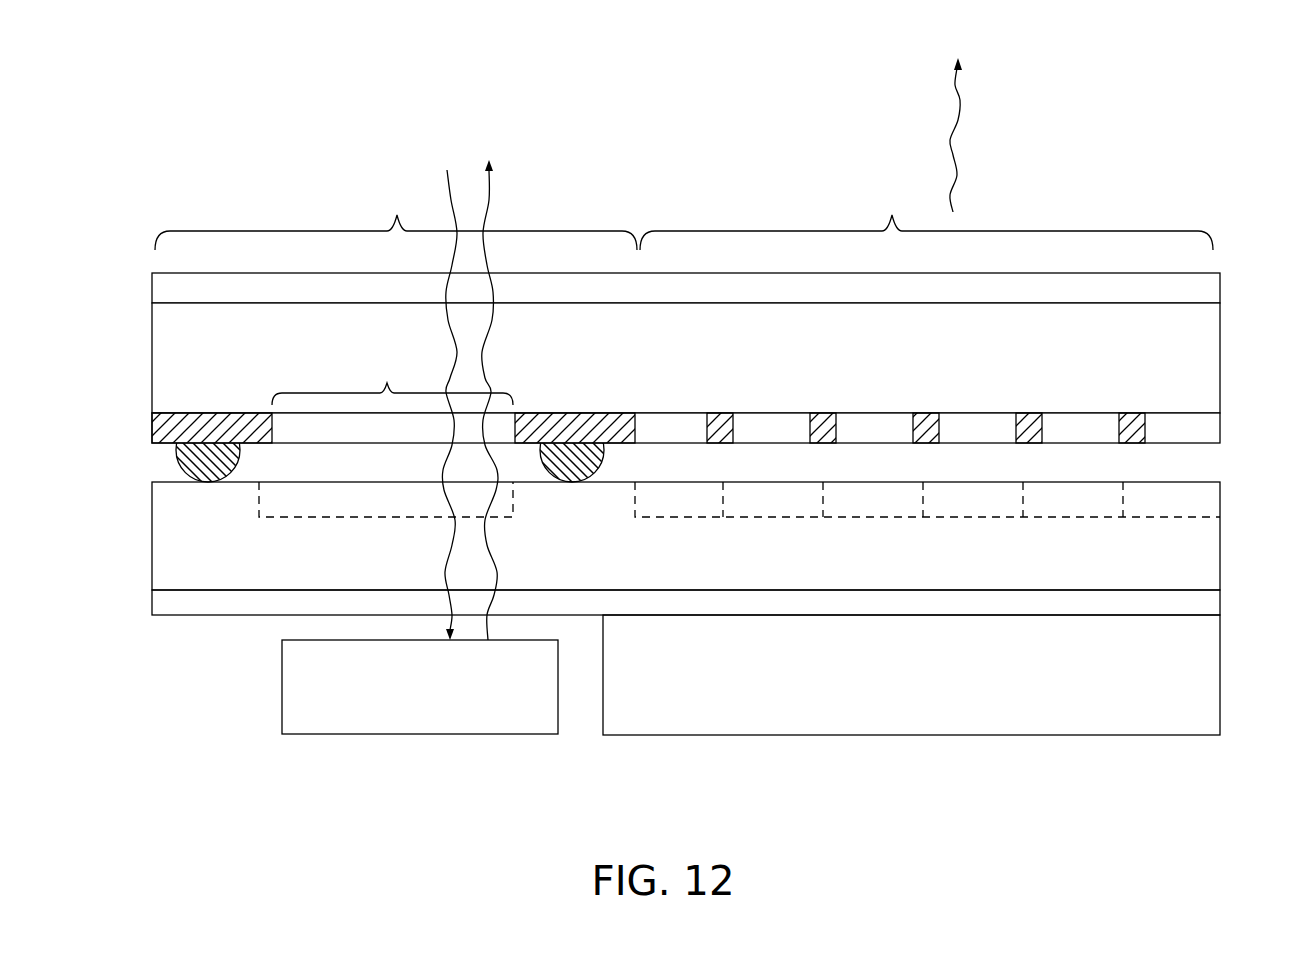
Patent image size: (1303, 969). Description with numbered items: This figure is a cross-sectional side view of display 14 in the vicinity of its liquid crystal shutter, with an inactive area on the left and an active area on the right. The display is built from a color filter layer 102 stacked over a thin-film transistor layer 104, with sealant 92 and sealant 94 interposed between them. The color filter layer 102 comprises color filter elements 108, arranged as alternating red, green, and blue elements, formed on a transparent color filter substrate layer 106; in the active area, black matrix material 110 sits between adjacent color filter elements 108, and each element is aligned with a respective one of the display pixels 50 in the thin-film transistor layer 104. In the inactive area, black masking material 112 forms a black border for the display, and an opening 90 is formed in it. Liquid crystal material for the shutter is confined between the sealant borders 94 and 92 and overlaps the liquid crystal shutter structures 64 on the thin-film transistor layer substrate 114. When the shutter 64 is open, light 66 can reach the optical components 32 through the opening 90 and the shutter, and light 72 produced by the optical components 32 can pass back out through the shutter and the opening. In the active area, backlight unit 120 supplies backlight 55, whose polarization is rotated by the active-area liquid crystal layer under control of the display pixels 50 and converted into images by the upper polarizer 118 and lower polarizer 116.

The display 14 is at (222, 152).
The light 66 is at (445, 190).
The light 72 is at (493, 197).
The backlight 55 is at (950, 145).
The upper polarizer 118 is at (1208, 290).
The color filter substrate layer 106 is at (1208, 358).
The color filter elements 108 is at (1208, 425).
The black matrix material 110 is at (1135, 413).
The black masking material 112 is at (237, 413).
The opening 90 is at (392, 381).
The sealant 92 is at (603, 457).
The sealant 94 is at (178, 466).
The color filter layer 102 is at (133, 305).
The thin-film transistor layer 104 is at (133, 480).
The liquid crystal shutter 64 is at (335, 517).
The display pixels 50 is at (703, 517).
The thin-film transistor layer substrate 114 is at (1208, 550).
The lower polarizer 116 is at (1208, 603).
The backlight unit 120 is at (1208, 677).
The optical components 32 is at (433, 734).